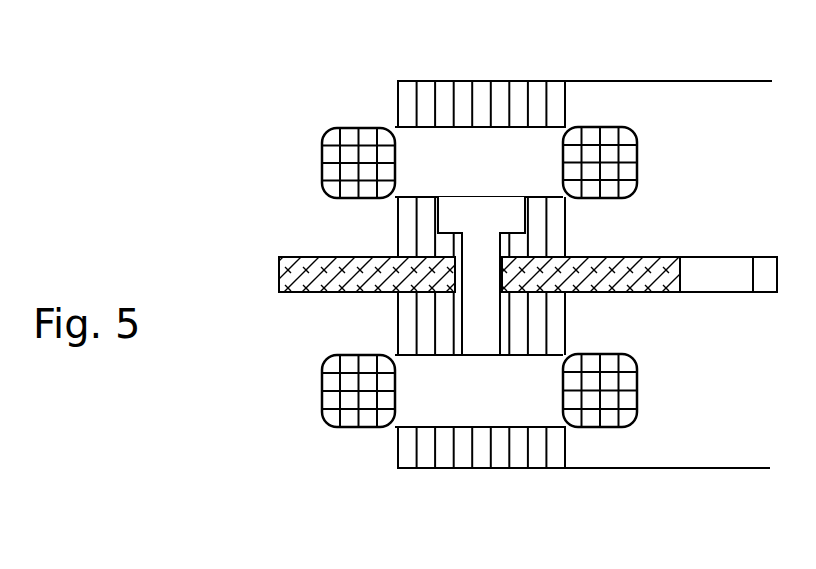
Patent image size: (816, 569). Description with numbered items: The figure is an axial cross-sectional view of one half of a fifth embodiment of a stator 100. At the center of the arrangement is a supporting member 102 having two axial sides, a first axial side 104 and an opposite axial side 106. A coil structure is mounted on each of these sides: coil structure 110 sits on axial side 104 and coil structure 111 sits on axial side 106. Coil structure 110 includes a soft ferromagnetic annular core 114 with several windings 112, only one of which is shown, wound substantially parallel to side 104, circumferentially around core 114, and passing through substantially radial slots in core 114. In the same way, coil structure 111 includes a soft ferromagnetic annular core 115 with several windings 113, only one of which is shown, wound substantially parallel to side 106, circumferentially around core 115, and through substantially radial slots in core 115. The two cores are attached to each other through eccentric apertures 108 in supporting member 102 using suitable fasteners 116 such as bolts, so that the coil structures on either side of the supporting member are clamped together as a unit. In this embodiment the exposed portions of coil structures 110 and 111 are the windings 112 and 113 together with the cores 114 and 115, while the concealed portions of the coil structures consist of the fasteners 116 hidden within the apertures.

The stator 100 is at (268, 450).
The supporting member 102 is at (279, 277).
The axial side 104 is at (660, 256).
The axial side 106 is at (660, 292).
The eccentric apertures 108 is at (362, 257).
The coil structure 110 is at (443, 74).
The coil structure 111 is at (546, 480).
The windings 112 is at (335, 142).
The windings 113 is at (332, 382).
The soft ferromagnetic annular core 114 is at (535, 92).
The soft ferromagnetic annular core 115 is at (462, 450).
The fasteners 116 is at (450, 214).